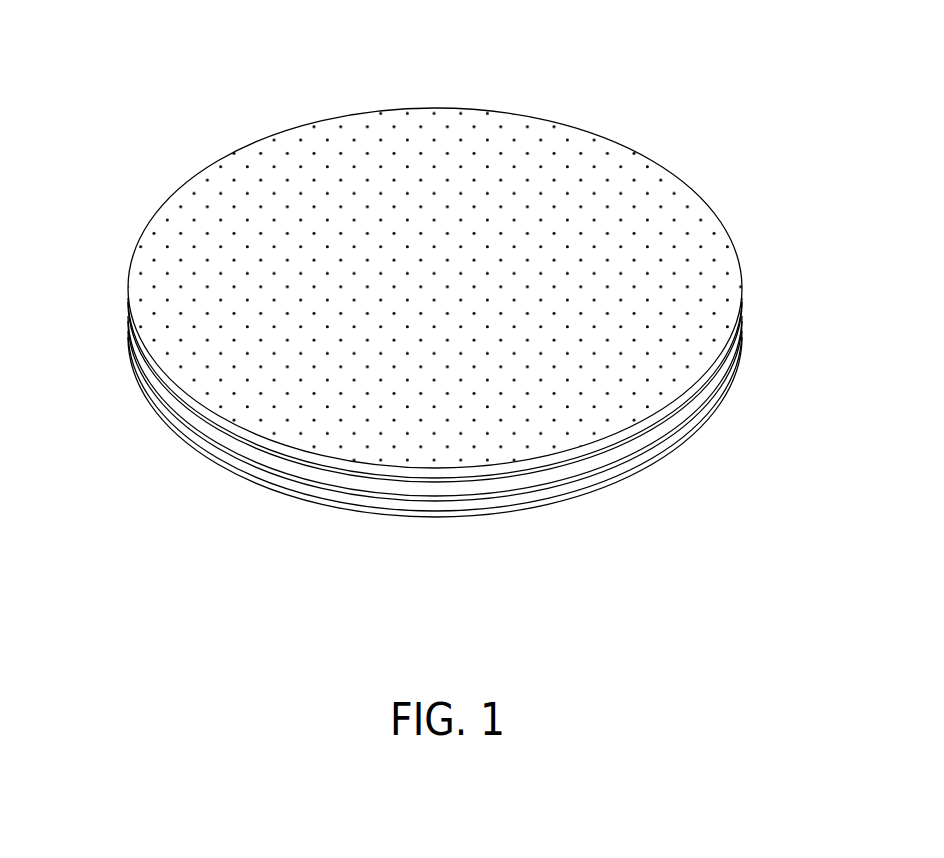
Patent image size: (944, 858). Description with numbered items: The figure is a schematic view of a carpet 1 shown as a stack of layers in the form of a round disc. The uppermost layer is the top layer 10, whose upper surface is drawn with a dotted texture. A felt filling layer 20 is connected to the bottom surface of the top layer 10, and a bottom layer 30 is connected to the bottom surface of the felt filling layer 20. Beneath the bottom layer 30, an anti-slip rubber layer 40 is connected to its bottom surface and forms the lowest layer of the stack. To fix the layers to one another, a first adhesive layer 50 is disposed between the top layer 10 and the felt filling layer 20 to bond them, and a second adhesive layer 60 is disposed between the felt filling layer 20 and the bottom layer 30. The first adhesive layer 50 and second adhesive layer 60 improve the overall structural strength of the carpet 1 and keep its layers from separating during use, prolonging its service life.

The carpet 1 is at (488, 29).
The top layer 10 is at (551, 317).
The felt filling layer 20 is at (209, 417).
The bottom layer 30 is at (546, 533).
The anti-slip rubber layer 40 is at (288, 556).
The first adhesive layer 50 is at (341, 414).
The second adhesive layer 60 is at (733, 381).